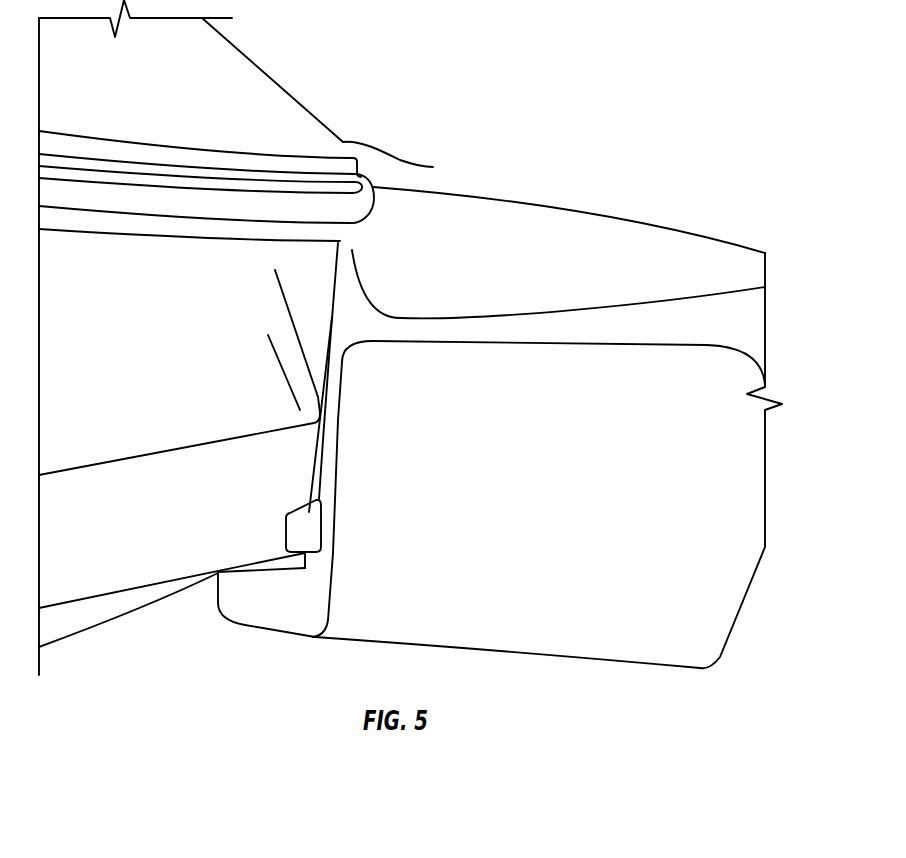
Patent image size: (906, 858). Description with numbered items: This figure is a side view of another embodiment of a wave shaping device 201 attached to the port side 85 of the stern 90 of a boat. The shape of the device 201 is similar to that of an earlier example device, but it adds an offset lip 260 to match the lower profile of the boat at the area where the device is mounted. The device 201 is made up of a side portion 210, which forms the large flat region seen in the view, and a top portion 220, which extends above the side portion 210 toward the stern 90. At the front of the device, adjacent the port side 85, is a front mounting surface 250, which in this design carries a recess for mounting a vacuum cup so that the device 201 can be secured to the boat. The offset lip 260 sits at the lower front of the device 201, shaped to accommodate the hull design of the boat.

The port side 85 is at (190, 338).
The stern 90 is at (335, 257).
The wave shaping device 201 is at (688, 270).
The side portion 210 is at (558, 504).
The top portion 220 is at (523, 267).
The front mounting surface 250 is at (327, 443).
The offset lip 260 is at (260, 597).